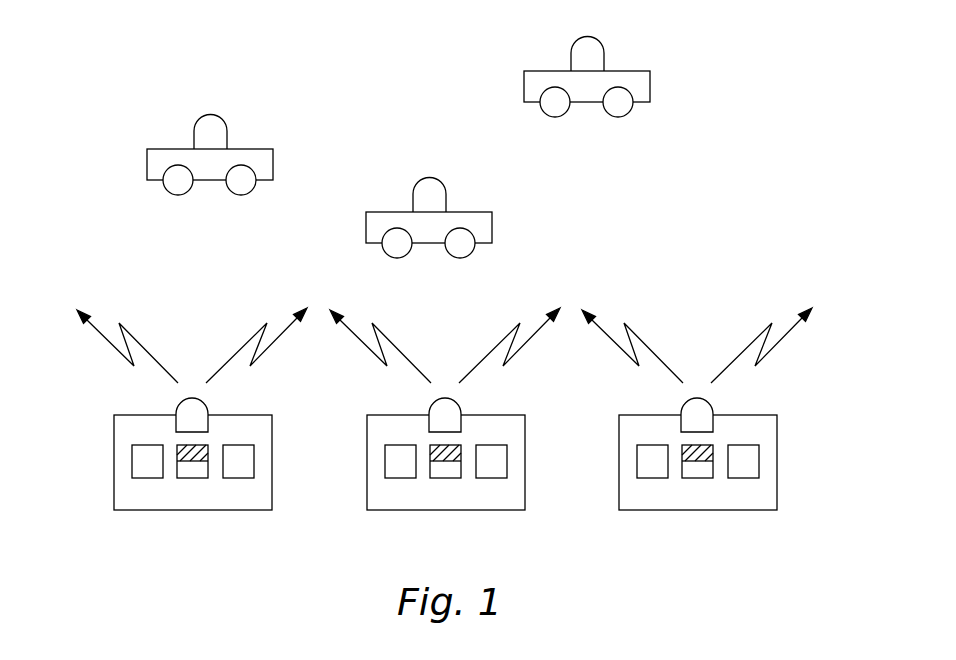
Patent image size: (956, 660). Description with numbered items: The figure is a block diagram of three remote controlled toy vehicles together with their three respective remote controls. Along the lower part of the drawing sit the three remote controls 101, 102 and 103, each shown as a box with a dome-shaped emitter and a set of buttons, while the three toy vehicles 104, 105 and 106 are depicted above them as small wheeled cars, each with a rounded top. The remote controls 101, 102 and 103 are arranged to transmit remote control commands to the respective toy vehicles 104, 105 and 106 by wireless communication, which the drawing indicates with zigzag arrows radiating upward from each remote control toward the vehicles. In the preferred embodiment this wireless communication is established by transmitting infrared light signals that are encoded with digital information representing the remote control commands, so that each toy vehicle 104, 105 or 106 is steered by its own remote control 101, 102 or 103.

The remote control 101 is at (777, 478).
The remote control 102 is at (526, 477).
The remote control 103 is at (273, 478).
The toy vehicle 104 is at (147, 168).
The toy vehicle 105 is at (492, 227).
The toy vehicle 106 is at (650, 85).